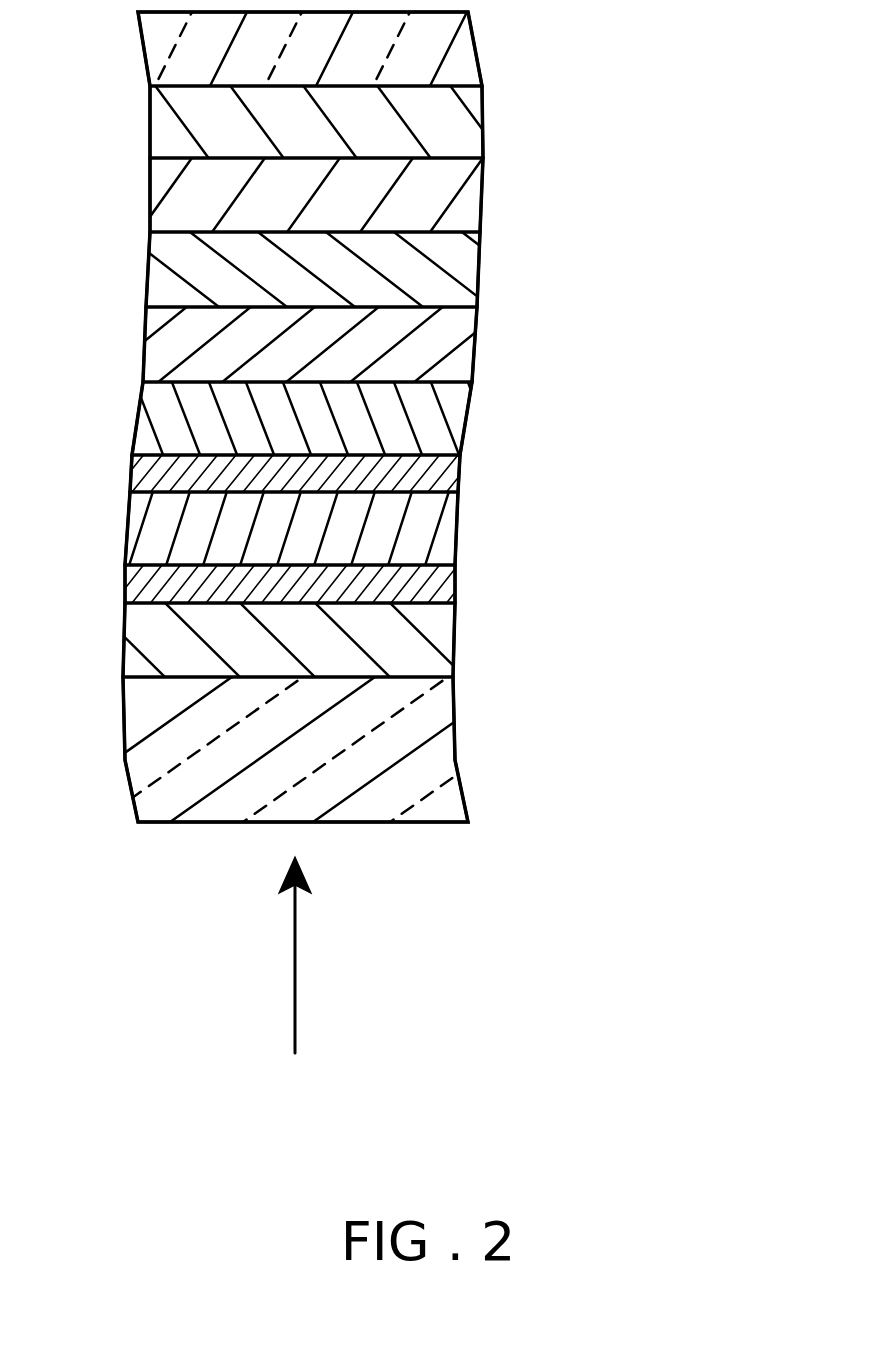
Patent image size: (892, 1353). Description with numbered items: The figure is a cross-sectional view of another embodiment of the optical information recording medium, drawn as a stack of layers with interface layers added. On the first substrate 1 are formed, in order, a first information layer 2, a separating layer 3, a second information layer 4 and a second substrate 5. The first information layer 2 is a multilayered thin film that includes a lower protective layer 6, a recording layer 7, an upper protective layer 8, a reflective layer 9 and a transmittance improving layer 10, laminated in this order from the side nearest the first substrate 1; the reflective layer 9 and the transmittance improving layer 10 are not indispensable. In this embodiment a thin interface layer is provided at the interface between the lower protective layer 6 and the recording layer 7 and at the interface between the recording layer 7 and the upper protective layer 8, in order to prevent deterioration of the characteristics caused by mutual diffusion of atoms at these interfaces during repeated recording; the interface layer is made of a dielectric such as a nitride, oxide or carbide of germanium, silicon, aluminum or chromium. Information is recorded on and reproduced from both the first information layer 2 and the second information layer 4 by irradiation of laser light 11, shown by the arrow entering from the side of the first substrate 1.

The first substrate 1 is at (445, 702).
The first information layer 2 is at (383, 454).
The separating layer 3 is at (460, 186).
The second information layer 4 is at (460, 113).
The second substrate 5 is at (460, 38).
The lower protective layer 6 is at (338, 640).
The recording layer 7 is at (445, 518).
The upper protective layer 8 is at (450, 408).
The reflective layer 9 is at (460, 333).
The transmittance improving layer 10 is at (460, 260).
The laser light 11 is at (295, 965).